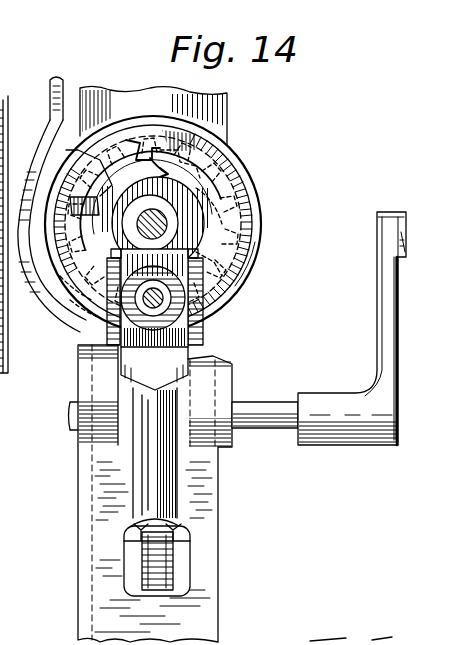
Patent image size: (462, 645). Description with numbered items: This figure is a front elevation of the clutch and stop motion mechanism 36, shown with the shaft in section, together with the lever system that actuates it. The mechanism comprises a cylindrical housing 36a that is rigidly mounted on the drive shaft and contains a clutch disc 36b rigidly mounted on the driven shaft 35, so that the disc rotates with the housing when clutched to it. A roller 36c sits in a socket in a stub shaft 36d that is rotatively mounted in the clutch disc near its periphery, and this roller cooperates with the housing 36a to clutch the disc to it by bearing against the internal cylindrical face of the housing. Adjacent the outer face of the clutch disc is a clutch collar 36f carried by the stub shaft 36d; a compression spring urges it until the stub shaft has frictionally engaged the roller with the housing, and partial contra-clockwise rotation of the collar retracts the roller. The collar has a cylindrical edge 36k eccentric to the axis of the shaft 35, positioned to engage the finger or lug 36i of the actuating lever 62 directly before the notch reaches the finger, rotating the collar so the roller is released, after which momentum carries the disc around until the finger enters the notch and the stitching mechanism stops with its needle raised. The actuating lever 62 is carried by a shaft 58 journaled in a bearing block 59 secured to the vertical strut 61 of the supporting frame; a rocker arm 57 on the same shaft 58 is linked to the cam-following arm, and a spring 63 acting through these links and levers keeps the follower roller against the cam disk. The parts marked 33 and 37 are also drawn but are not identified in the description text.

The housing frame 33 is at (2, 96).
The driven shaft 35 is at (165, 216).
The stop motion mechanism 36 is at (268, 244).
The cylindrical housing 36a is at (261, 214).
The clutch disc 36b is at (215, 290).
The roller 36c is at (66, 300).
The stub shaft 36d is at (92, 324).
The clutch collar 36f is at (197, 160).
The finger or lug 36i is at (64, 332).
The cylindrical edge 36k is at (210, 205).
The ring rim 37 is at (250, 262).
The rocker arm 57 is at (380, 299).
The shaft 58 is at (272, 430).
The bearing block 59 is at (228, 378).
The vertical strut 61 is at (216, 563).
The actuating lever 62 is at (168, 483).
The spring 63 is at (172, 574).